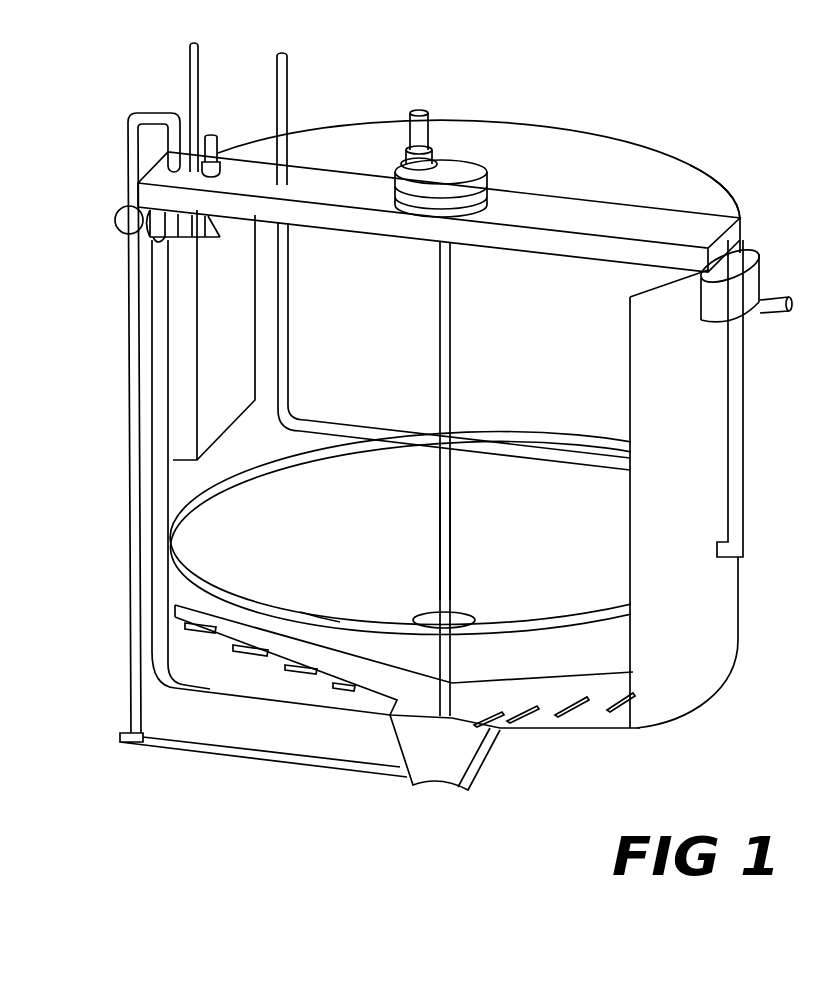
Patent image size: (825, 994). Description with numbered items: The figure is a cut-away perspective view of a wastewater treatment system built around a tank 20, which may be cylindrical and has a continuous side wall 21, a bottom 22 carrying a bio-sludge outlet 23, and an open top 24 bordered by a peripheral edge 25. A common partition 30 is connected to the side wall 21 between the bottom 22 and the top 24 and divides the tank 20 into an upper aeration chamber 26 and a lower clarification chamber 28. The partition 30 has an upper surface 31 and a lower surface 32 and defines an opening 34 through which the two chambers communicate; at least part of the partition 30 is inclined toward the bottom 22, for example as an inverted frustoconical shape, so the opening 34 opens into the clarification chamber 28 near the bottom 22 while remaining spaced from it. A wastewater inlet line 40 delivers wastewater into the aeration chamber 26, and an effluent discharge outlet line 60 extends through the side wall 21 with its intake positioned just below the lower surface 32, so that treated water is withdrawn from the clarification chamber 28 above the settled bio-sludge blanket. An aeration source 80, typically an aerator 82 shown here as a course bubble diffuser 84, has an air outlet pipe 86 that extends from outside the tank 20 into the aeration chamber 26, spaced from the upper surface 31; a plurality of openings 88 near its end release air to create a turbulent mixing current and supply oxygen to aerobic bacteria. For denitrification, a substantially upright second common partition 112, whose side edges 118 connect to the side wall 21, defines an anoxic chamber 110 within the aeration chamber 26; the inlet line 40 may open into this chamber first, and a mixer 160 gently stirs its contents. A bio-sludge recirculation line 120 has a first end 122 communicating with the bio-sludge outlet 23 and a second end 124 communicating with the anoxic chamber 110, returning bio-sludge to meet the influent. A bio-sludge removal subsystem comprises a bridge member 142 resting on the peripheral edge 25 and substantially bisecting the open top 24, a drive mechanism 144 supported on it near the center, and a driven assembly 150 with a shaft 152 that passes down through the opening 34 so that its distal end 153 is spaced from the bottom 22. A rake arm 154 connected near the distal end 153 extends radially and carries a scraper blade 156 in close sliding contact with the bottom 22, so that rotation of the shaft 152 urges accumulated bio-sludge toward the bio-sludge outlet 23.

The tank 20 is at (705, 700).
The side wall 21 is at (630, 392).
The bottom 22 is at (575, 730).
The bio-sludge outlet 23 is at (497, 728).
The open top 24 is at (672, 170).
The peripheral edge 25 is at (727, 185).
The upper aeration chamber 26 is at (420, 392).
The lower clarification chamber 28 is at (280, 692).
The common partition 30 is at (238, 557).
The upper surface 31 is at (315, 603).
The lower surface 32 is at (267, 625).
The opening 34 is at (452, 620).
The wastewater inlet line 40 is at (200, 77).
The effluent discharge outlet line 60 is at (743, 415).
The aeration source 80 is at (285, 93).
The aerator 82 is at (290, 280).
The course bubble diffuser 84 is at (290, 250).
The air outlet pipe 86 is at (525, 443).
The openings 88 is at (298, 420).
The anoxic chamber 110 is at (128, 189).
The second common partition 112 is at (225, 330).
The side edges 118 is at (168, 257).
The bio-sludge recirculation line 120 is at (129, 540).
The first end 122 is at (125, 736).
The second end 124 is at (185, 237).
The bridge member 142 is at (563, 212).
The drive mechanism 144 is at (453, 167).
The driven assembly 150 is at (445, 320).
The shaft 152 is at (450, 523).
The distal end 153 is at (447, 712).
The rake arm 154 is at (372, 648).
The scraper blade 156 is at (350, 685).
The mixer 160 is at (212, 135).